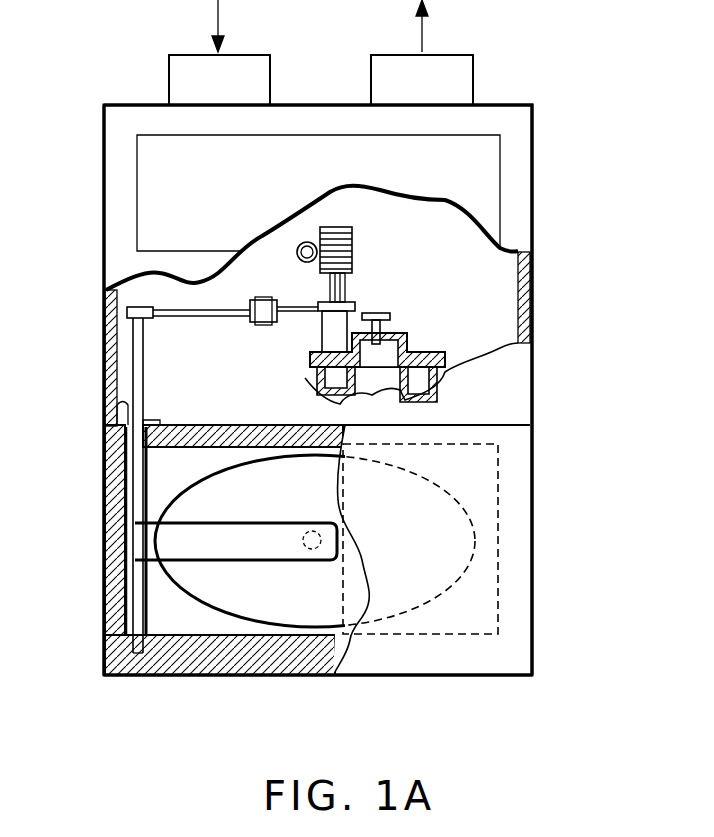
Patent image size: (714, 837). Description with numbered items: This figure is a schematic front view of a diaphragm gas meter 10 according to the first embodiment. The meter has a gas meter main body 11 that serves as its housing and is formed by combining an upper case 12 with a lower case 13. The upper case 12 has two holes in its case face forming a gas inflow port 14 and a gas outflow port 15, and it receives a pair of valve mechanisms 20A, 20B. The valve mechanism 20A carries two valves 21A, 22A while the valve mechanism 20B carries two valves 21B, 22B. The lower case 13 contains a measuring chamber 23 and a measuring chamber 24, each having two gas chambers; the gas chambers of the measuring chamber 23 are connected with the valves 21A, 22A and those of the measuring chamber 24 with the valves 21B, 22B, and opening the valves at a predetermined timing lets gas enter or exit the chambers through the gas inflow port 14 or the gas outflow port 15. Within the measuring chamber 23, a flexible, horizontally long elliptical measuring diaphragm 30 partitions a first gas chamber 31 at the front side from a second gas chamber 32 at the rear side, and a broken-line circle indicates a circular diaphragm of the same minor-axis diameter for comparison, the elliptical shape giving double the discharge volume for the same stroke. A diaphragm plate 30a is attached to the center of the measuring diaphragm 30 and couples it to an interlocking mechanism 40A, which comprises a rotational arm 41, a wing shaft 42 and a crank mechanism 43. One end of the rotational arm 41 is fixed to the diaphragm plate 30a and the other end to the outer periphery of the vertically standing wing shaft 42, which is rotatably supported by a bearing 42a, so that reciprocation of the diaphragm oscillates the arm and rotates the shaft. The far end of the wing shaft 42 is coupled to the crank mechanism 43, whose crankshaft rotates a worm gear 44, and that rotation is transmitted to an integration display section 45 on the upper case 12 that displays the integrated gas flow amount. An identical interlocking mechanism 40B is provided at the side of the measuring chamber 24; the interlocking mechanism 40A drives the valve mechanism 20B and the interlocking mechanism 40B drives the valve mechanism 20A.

The diaphragm gas meter 10 is at (104, 235).
The gas meter main body 11 is at (606, 389).
The upper case 12 is at (533, 212).
The lower case 13 is at (532, 502).
The gas inflow port 14 is at (272, 68).
The gas outflow port 15 is at (474, 68).
The valve mechanism 20A is at (411, 338).
The valve mechanism 20B is at (423, 352).
The valve 21A is at (277, 382).
The valve 21B is at (312, 360).
The valve 22A is at (473, 370).
The valve 22B is at (440, 362).
The measuring chamber 23 is at (336, 573).
The measuring chamber 24 is at (190, 625).
The measuring diaphragm 30 is at (252, 607).
The diaphragm plate 30a is at (312, 549).
The first gas chamber 31 is at (220, 695).
The second gas chamber 32 is at (162, 625).
The interlocking mechanism 40A is at (404, 316).
The interlocking mechanism 40B is at (468, 305).
The rotational arm 41 is at (140, 508).
The wing shaft 42 is at (133, 582).
The bearing 42a is at (118, 413).
The crank mechanism 43 is at (250, 323).
The worm gear 44 is at (352, 233).
The integration display section 45 is at (500, 155).